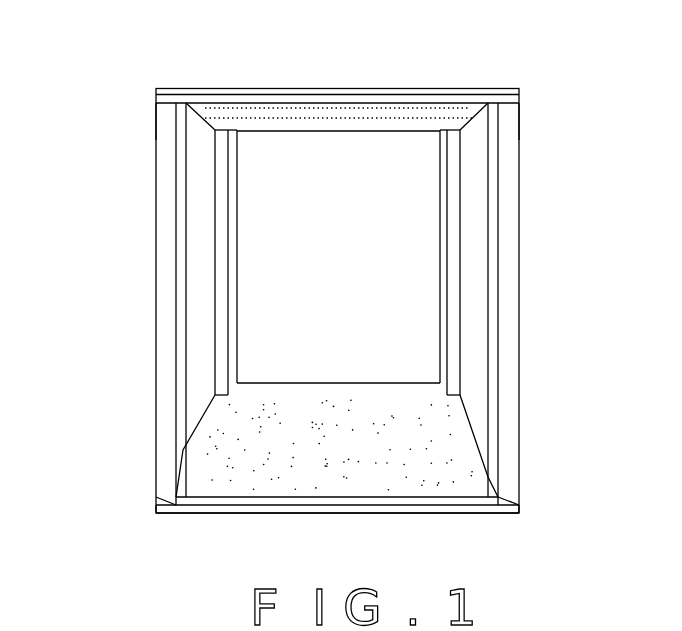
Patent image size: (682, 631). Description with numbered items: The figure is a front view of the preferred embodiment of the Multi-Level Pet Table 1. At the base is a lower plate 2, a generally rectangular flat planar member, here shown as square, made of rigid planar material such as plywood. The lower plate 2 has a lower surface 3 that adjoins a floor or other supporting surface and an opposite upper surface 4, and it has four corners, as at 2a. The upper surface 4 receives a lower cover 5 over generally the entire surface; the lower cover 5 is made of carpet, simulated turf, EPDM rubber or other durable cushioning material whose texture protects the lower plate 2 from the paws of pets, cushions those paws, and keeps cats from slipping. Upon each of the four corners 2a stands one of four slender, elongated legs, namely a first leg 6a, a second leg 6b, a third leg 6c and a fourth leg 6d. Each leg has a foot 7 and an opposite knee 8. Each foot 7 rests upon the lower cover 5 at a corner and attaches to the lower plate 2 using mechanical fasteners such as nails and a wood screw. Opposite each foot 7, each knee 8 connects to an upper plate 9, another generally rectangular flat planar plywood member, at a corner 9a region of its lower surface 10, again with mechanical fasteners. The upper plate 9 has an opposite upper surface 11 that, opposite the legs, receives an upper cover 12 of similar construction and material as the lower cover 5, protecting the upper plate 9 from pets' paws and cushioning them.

The Multi-Level Pet Table 1 is at (128, 237).
The lower plate 2 is at (400, 514).
The corners 2a is at (155, 512).
The lower surface 3 is at (331, 500).
The upper surface 4 is at (255, 516).
The lower cover 5 is at (337, 446).
The first leg 6a is at (155, 202).
The second leg 6b is at (520, 297).
The third leg 6c is at (236, 244).
The fourth leg 6d is at (438, 293).
The foot 7 is at (235, 383).
The knee 8 is at (153, 124).
The upper plate 9 is at (345, 132).
The top corner 9a is at (155, 95).
The lower surface 10 is at (310, 132).
The upper surface 11 is at (301, 86).
The upper cover 12 is at (416, 75).